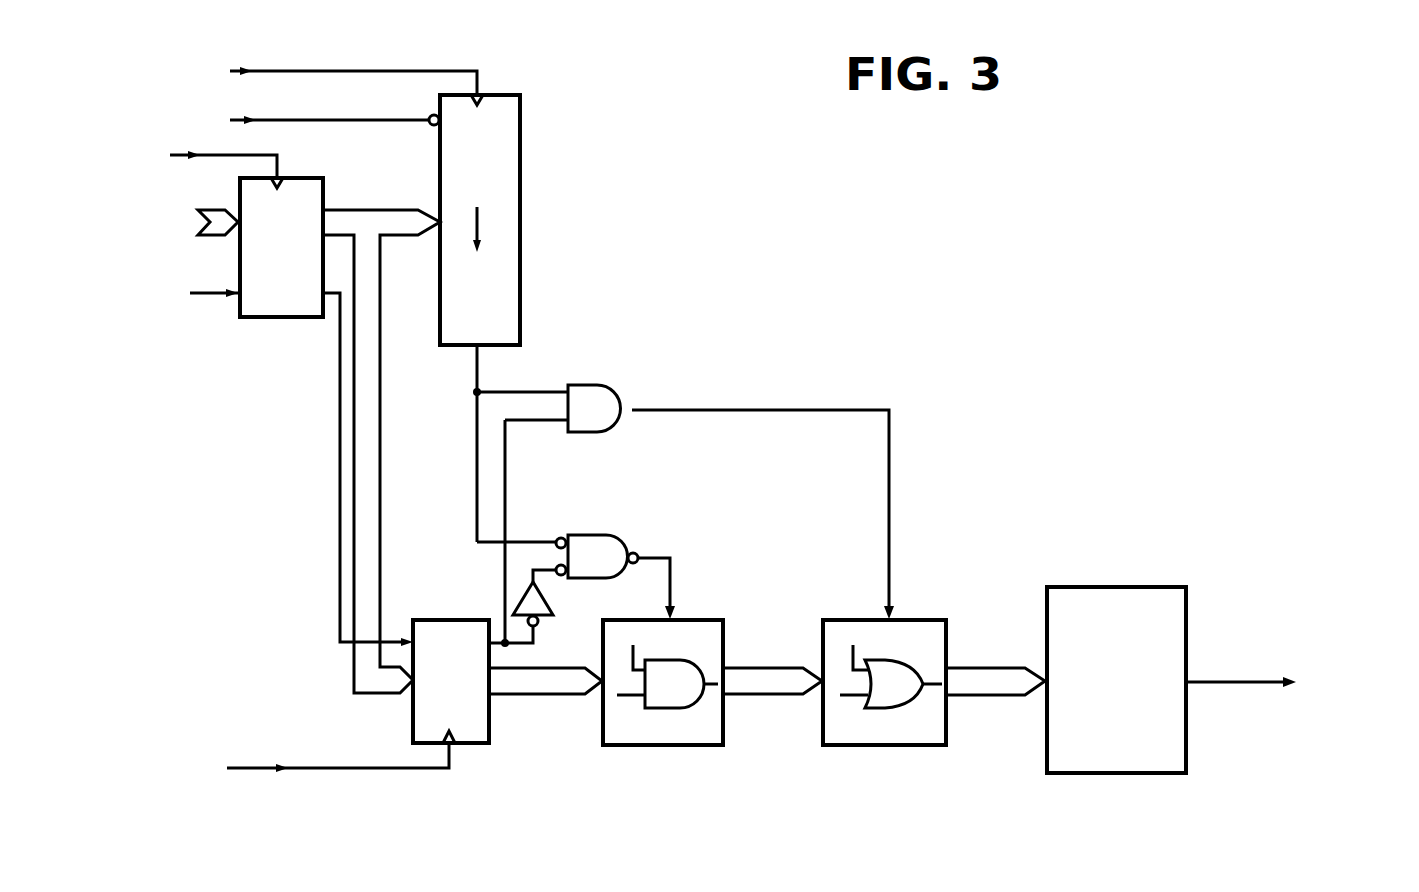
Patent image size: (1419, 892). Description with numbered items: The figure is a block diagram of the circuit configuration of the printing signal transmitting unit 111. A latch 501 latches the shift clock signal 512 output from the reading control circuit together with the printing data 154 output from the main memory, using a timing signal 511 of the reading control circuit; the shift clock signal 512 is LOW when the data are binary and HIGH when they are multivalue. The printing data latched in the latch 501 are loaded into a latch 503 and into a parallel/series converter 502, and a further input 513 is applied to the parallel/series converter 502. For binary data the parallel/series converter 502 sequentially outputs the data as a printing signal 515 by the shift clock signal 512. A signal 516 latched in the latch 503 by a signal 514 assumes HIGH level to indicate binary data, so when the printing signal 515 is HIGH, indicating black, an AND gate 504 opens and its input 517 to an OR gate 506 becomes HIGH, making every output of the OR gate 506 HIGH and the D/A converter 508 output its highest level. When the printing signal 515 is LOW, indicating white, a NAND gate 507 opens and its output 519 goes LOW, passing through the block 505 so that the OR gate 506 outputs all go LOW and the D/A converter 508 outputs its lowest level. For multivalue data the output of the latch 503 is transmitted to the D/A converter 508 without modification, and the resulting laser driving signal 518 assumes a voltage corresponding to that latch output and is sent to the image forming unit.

The printing signal transmitting unit 111 is at (978, 308).
The printing data 154 is at (212, 237).
The latch 501 is at (286, 318).
The parallel/series converter 502 is at (520, 193).
The latch 503 is at (489, 728).
The AND gate 504 is at (607, 385).
The AND gate block 505 is at (680, 745).
The OR gate 506 is at (878, 745).
The NAND gate 507 is at (613, 535).
The D/A converter 508 is at (1118, 773).
The timing signal 511 is at (223, 153).
The shift clock signal 512 is at (333, 183).
The load signal 513 is at (334, 108).
The signal 514 is at (338, 772).
The printing signal 515 is at (476, 372).
The signal 516 is at (494, 577).
The input 517 is at (892, 503).
The laser driving signal 518 is at (1248, 682).
The NAND gate output signal 519 is at (682, 584).